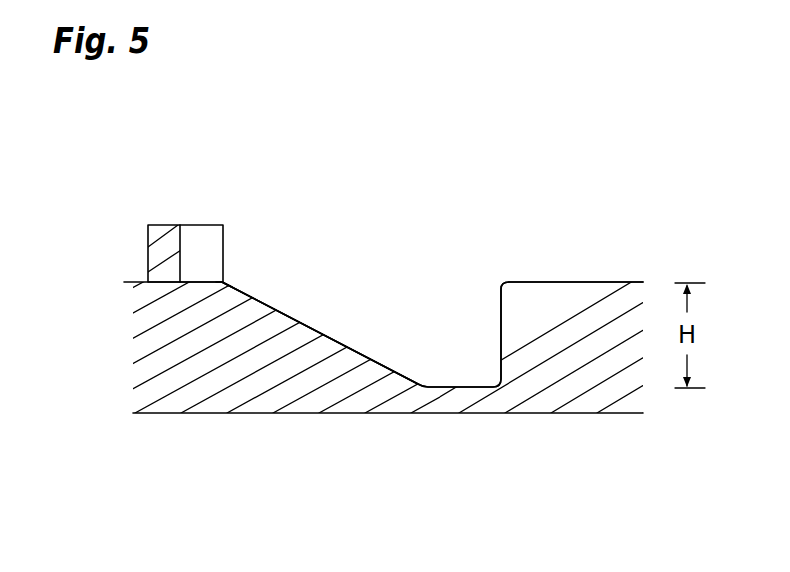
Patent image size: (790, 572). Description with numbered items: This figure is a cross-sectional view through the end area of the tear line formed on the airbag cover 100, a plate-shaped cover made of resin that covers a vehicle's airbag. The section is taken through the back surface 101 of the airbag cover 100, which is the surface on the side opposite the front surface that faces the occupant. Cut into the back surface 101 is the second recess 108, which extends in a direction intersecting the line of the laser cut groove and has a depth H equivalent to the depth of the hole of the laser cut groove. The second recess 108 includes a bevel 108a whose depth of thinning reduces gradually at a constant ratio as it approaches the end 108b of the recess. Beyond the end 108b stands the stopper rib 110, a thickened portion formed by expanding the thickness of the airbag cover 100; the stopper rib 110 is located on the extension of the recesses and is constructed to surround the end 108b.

The airbag cover 100 is at (533, 220).
The back surface 101 is at (602, 283).
The second recess 108 is at (500, 275).
The bevel 108a is at (303, 323).
The end 108b is at (228, 282).
The stopper rib 110 is at (158, 255).